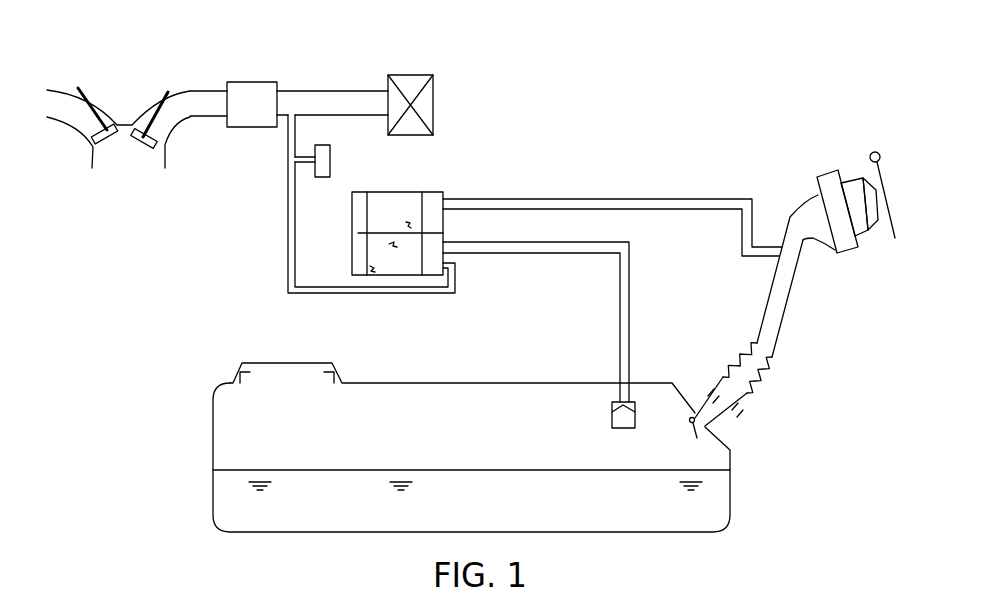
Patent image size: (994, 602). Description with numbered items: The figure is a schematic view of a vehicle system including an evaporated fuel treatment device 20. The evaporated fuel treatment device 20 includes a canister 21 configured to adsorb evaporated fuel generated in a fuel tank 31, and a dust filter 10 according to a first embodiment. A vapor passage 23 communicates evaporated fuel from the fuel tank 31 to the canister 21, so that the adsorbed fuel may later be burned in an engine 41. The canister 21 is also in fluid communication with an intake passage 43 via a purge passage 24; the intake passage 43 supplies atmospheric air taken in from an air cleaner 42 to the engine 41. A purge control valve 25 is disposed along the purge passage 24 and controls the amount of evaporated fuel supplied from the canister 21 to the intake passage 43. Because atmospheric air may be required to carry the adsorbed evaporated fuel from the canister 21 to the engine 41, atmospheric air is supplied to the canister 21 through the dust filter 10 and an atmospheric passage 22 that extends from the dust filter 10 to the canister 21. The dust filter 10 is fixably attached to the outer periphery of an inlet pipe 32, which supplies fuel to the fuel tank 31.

The dust filter 10 is at (829, 172).
The evaporated fuel treatment device 20 is at (550, 162).
The canister 21 is at (412, 192).
The atmospheric passage 22 is at (637, 198).
The vapor passage 23 is at (629, 292).
The purge passage 24 is at (398, 293).
The purge control valve 25 is at (330, 157).
The fuel tank 31 is at (520, 383).
The inlet pipe 32 is at (795, 285).
The engine 41 is at (133, 82).
The air cleaner 42 is at (410, 75).
The intake passage 43 is at (317, 91).